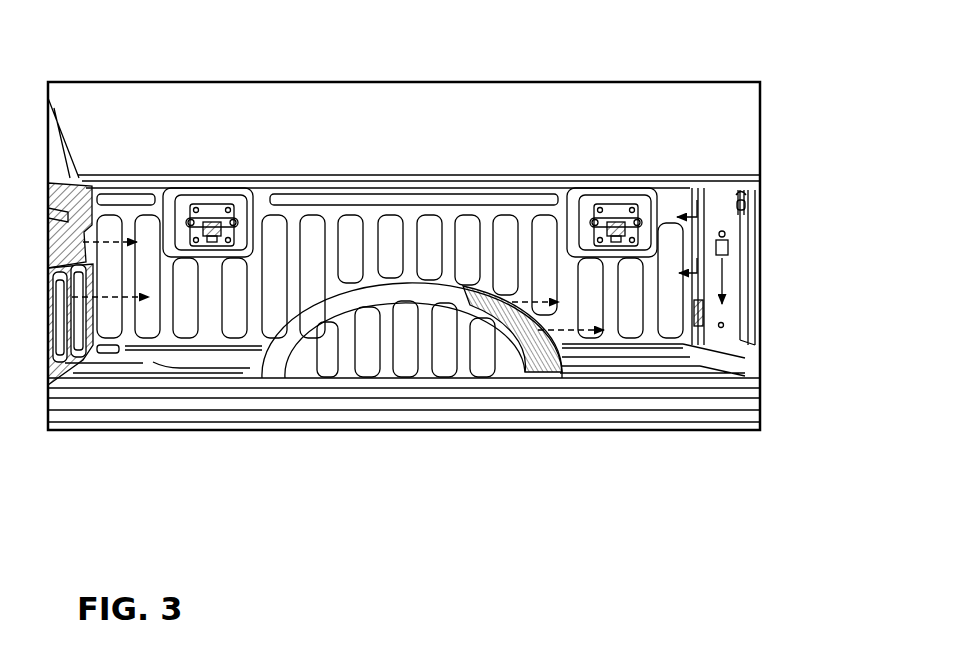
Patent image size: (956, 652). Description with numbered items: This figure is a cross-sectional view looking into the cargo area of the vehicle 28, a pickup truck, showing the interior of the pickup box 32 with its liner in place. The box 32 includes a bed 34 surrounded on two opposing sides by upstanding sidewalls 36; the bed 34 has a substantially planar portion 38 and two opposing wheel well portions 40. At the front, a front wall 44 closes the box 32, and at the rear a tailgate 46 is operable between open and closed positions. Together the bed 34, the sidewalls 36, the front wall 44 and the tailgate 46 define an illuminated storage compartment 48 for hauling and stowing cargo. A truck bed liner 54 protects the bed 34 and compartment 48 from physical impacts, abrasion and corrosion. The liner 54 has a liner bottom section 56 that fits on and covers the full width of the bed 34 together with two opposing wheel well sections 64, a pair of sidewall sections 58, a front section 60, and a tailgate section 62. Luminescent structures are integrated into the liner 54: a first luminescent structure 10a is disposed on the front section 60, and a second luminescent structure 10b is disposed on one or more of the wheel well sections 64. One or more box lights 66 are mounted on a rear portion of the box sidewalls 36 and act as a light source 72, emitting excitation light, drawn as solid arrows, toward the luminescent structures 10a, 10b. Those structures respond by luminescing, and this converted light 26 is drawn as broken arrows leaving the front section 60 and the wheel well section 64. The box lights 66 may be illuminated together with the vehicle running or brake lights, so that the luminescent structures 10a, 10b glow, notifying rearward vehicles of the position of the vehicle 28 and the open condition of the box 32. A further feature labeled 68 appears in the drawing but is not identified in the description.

The vehicle 28 is at (328, 77).
The pickup box 32 is at (448, 174).
The sidewall sections 58 is at (371, 215).
The front section 60 is at (115, 242).
The bed 34 is at (219, 356).
The sidewalls 36 is at (560, 193).
The hinge upper portion 68 is at (85, 181).
The front wall 44 is at (66, 355).
The first luminescent structure 10a is at (84, 230).
The converted light 26 is at (130, 297).
The wheel well sections 64 is at (307, 358).
The illuminated storage compartment 48 is at (216, 380).
The wheel well portions 40 is at (528, 362).
The second luminescent structure 10b is at (490, 315).
The planar portion 38 is at (392, 415).
The truck bed liner 54 is at (650, 405).
The liner bottom section 56 is at (671, 404).
The box lights 66 is at (629, 302).
The light source 72 is at (730, 259).
The tailgate 46 is at (759, 186).
The tailgate section 62 is at (759, 327).